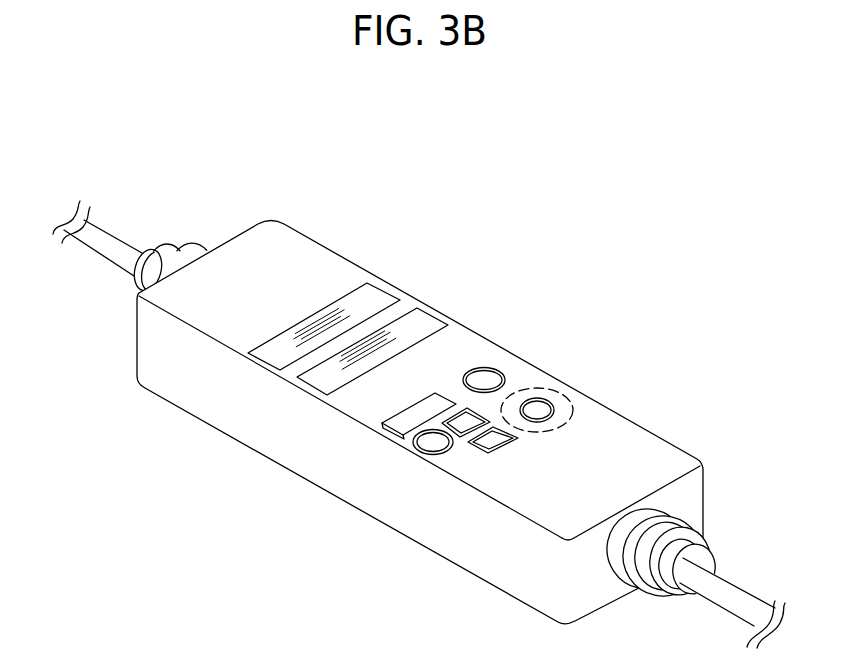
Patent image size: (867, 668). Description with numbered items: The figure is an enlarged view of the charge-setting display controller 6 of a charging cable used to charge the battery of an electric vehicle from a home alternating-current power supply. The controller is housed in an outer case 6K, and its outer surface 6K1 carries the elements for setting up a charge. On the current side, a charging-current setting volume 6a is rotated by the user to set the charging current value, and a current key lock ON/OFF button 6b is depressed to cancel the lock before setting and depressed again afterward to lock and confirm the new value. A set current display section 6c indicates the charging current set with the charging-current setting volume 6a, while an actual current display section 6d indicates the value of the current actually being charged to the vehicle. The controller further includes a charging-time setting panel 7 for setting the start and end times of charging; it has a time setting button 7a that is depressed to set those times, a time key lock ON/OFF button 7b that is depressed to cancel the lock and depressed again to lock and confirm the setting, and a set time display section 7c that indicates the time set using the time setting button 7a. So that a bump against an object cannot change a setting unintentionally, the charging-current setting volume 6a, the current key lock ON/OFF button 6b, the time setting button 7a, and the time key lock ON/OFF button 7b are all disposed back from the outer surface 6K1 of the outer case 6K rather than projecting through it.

The charge-setting display controller 6 is at (419, 369).
The outer case 6K is at (420, 384).
The outer surface 6K1 is at (369, 386).
The set current display section 6c is at (373, 290).
The actual current display section 6d is at (421, 317).
The current key lock ON/OFF button 6b is at (485, 377).
The charging-current setting volume 6a is at (535, 407).
The charging-time setting panel 7 is at (380, 484).
The time setting button 7a is at (486, 443).
The time key lock ON/OFF button 7b is at (431, 442).
The set time display section 7c is at (390, 424).